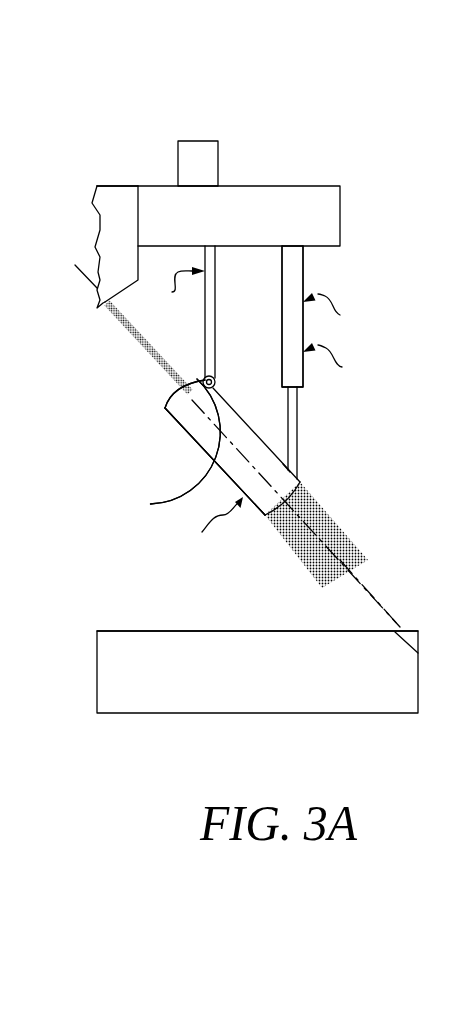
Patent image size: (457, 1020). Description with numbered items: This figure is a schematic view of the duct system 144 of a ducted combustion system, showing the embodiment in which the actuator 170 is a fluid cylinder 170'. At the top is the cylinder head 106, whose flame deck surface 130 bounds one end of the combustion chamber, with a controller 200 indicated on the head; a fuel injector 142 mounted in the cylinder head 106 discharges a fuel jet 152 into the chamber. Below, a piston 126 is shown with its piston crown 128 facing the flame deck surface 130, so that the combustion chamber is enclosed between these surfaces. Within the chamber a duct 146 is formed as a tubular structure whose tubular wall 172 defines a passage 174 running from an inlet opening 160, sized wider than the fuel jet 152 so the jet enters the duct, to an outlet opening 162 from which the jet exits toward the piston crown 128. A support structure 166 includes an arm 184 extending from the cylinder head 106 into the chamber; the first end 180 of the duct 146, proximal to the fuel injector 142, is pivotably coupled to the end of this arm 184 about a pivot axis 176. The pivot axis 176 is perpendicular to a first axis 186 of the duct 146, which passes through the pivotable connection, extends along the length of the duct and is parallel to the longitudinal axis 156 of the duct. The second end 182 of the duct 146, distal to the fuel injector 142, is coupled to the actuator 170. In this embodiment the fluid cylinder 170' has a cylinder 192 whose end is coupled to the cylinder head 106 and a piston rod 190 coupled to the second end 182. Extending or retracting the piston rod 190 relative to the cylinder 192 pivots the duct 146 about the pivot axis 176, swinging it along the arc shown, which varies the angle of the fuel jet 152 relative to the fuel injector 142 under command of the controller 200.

The cylinder head 106 is at (303, 185).
The controller 200 is at (195, 141).
The fuel injector 142 is at (120, 185).
The flame deck surface 130 is at (155, 258).
The arm 184 is at (205, 300).
The support structure 166 is at (170, 288).
The first end 180 is at (215, 379).
The tubular wall 172 is at (255, 419).
The inlet opening 160 is at (168, 402).
The passage 174 is at (168, 415).
The duct 146 is at (183, 430).
The pivot axis 176 is at (177, 496).
The duct system 144 is at (215, 484).
The cylinder 192 is at (305, 262).
The fluid cylinder 170' is at (341, 310).
The actuator 170 is at (331, 316).
The piston rod 190 is at (300, 405).
The second end 182 is at (283, 464).
The fuel jet 152 is at (142, 341).
The outlet opening 162 is at (318, 503).
The first axis 186 is at (382, 570).
The longitudinal axis 156 is at (368, 593).
The piston 126 is at (97, 672).
The piston crown 128 is at (138, 631).